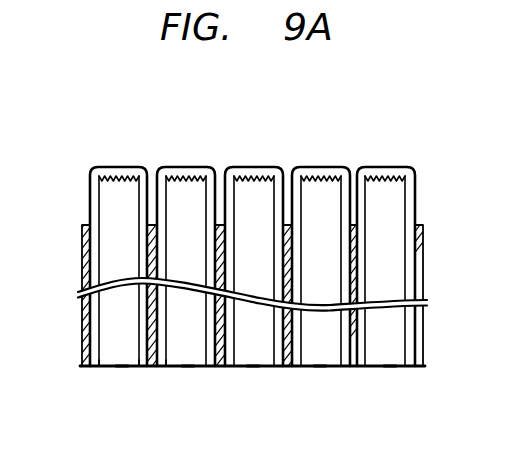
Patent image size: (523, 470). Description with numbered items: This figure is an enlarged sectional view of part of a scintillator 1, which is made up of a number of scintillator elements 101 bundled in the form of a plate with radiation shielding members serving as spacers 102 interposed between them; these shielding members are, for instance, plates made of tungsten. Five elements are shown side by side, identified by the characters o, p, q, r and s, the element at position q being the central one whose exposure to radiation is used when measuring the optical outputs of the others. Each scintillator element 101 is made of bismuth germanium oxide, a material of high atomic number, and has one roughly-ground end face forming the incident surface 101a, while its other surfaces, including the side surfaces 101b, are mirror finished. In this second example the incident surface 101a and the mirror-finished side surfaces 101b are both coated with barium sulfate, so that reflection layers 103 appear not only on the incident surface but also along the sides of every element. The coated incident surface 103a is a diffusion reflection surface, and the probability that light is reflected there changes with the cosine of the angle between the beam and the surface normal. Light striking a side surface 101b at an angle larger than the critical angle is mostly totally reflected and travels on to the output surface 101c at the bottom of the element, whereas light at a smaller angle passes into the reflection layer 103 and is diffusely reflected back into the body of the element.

The scintillator 1 is at (359, 130).
The scintillator element 101 is at (116, 191).
The incident surface 101a is at (318, 177).
The side surface 101b is at (98, 197).
The output surface 101c is at (130, 368).
The spacer 102 is at (152, 224).
The reflection layer 103 is at (113, 176).
The coated incident surface 103a is at (253, 177).
The scintillator element 101o o is at (123, 368).
The scintillator element 101p p is at (188, 368).
The central scintillator element 101q q is at (253, 368).
The scintillator element 101r r is at (320, 368).
The scintillator element 101s s is at (390, 368).